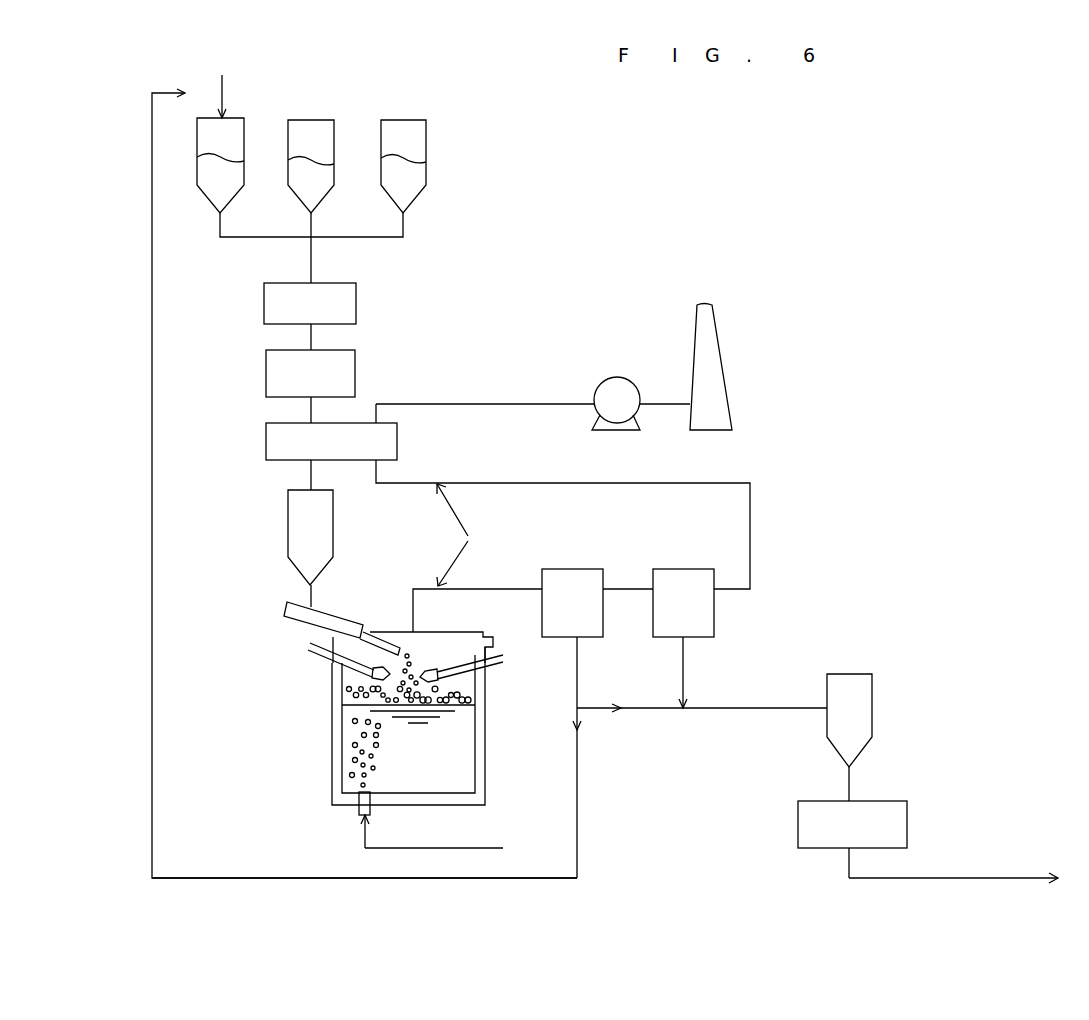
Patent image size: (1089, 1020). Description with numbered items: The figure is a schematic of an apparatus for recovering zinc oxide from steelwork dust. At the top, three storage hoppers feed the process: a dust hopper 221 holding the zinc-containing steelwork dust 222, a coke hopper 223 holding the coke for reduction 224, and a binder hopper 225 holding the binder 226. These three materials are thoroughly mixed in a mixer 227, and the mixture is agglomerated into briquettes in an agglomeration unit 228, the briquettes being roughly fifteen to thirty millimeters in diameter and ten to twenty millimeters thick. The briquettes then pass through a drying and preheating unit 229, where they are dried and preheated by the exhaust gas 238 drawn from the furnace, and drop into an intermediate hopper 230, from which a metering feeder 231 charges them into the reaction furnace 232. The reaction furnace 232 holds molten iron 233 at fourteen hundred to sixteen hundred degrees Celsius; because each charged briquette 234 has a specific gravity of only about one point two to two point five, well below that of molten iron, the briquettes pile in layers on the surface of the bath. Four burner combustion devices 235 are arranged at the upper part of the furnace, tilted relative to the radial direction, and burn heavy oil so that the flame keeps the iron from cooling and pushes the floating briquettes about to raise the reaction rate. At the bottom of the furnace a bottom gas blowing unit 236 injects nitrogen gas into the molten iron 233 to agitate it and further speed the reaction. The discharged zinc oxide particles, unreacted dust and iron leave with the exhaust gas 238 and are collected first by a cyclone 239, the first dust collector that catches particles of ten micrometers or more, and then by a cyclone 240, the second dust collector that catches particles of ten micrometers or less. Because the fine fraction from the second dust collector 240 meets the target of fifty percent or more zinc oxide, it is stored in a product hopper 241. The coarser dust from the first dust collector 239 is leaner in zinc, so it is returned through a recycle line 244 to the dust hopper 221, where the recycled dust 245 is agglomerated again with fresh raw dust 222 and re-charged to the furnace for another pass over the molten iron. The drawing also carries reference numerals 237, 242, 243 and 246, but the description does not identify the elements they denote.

The dust hopper 221 is at (236, 118).
The steelwork dust 222 is at (215, 85).
The coke hopper 223 is at (328, 195).
The coke for reduction 224 is at (308, 160).
The binder hopper 225 is at (420, 195).
The binder 226 is at (410, 158).
The mixer 227 is at (356, 300).
The agglomeration unit 228 is at (355, 368).
The drying and preheating unit 229 is at (266, 437).
The intermediate hopper 230 is at (288, 515).
The metering feeder 231 is at (287, 607).
The reaction furnace 232 is at (462, 755).
The molten iron 233 is at (486, 708).
The charged briquette 234 is at (407, 653).
The burner combustion devices 235 is at (310, 648).
The bottom gas blowing unit 236 is at (359, 810).
The bubbles 237 is at (352, 775).
The exhaust gas 238 is at (470, 535).
The cyclone 239 is at (565, 578).
The cyclone 240 is at (683, 569).
The product hopper 241 is at (853, 674).
The dryer 242 is at (907, 805).
The product outlet 243 is at (953, 868).
The recycle line 244 is at (385, 878).
The recycled dust 245 is at (363, 469).
The pump 246 is at (617, 377).